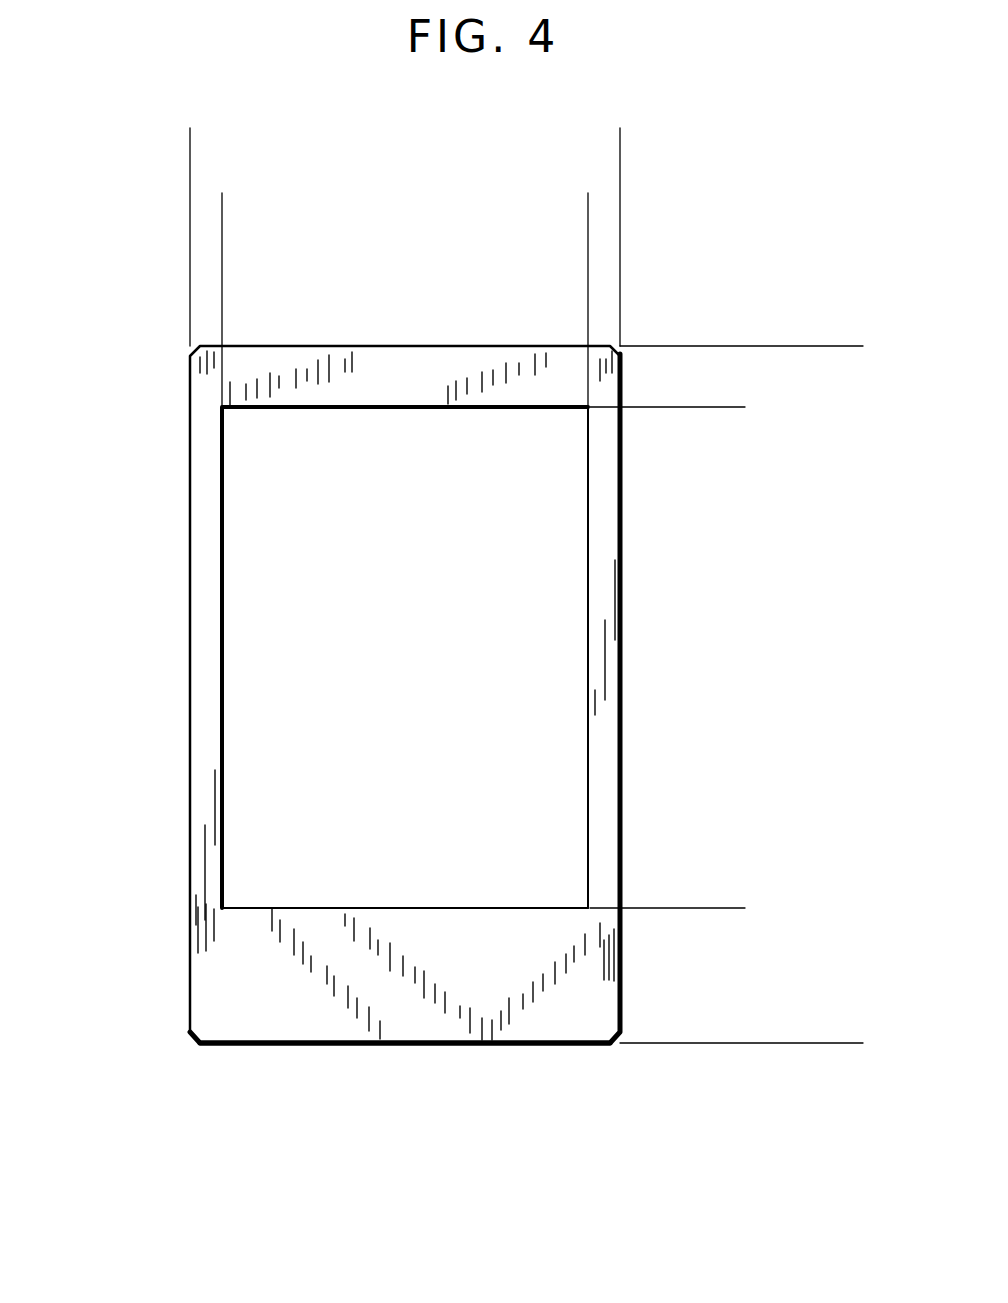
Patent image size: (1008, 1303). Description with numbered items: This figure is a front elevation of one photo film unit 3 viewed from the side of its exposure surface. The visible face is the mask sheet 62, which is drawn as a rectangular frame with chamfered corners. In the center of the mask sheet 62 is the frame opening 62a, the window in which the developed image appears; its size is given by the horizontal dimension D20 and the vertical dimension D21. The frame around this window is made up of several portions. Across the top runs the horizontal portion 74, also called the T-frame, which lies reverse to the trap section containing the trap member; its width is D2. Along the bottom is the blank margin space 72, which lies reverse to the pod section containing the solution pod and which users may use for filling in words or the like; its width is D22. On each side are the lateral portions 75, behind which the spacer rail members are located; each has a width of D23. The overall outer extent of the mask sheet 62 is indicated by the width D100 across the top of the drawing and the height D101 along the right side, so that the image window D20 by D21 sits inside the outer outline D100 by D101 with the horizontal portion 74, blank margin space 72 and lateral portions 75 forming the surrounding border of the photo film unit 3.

The photo film unit 3 is at (348, 1060).
The mask sheet 62 is at (190, 980).
The frame opening 62a is at (224, 681).
The blank margin space 72 is at (497, 1022).
The horizontal portion 74 is at (398, 362).
The lateral portions 75 is at (205, 550).
The outer width dimension D100 is at (620, 142).
The width of the frame opening D20 is at (588, 209).
The width of the lateral portions D23 is at (176, 213).
The width of the horizontal portion D2 is at (728, 290).
The height of the frame opening D21 is at (728, 407).
The width of the blank margin space D22 is at (728, 908).
The outer height dimension D101 is at (857, 346).